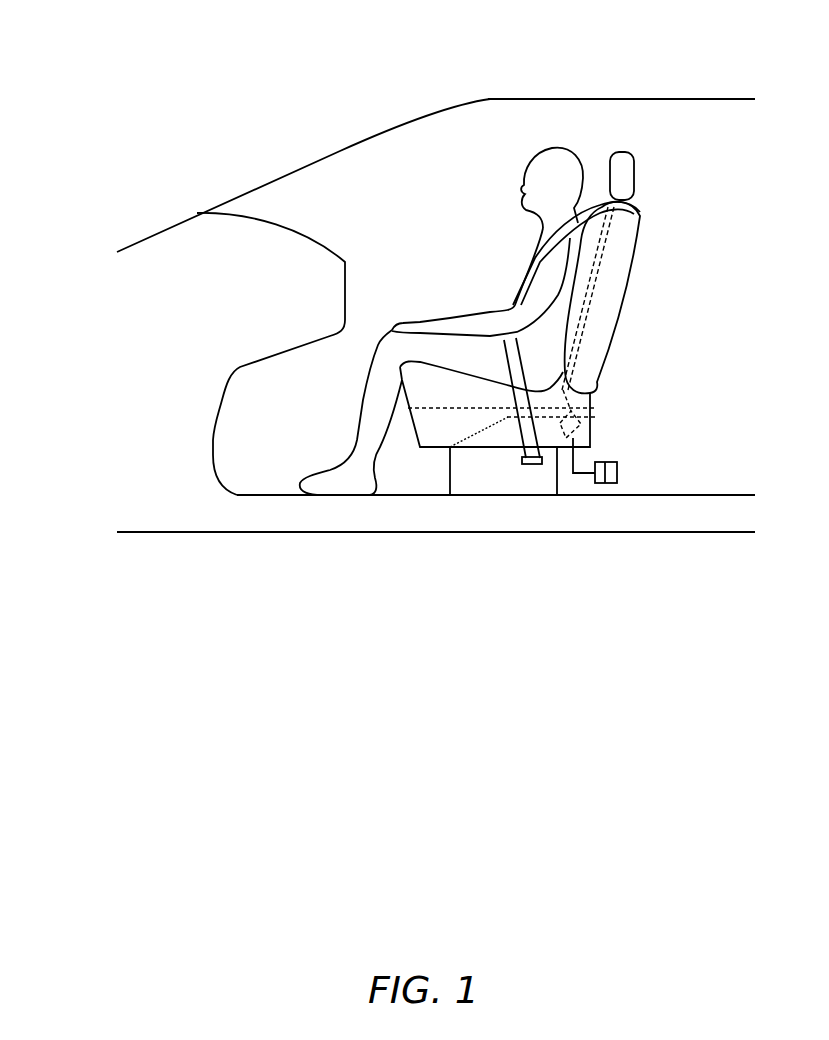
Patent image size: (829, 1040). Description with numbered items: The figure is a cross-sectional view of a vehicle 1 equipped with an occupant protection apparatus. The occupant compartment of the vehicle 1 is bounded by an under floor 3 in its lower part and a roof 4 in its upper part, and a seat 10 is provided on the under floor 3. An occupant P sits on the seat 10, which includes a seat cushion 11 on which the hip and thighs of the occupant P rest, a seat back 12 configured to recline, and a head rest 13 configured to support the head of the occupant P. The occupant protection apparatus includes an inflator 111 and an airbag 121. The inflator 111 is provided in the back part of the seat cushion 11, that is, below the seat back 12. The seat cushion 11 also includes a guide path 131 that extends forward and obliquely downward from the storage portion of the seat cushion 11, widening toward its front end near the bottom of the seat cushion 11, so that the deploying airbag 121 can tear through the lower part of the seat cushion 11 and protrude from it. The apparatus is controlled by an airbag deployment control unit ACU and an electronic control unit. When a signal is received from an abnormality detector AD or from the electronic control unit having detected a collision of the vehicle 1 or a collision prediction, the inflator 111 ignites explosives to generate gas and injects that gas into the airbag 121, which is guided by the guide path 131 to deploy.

The vehicle 1 is at (436, 274).
The under floor 3 is at (693, 495).
The roof 4 is at (632, 99).
The seat 10 is at (558, 340).
The seat cushion 11 is at (483, 438).
The seat back 12 is at (623, 297).
The head rest 13 is at (622, 152).
The inflator 111 is at (582, 424).
The airbag 121 is at (598, 322).
The guide path 131 is at (440, 413).
The occupant P is at (554, 148).
The airbag deployment control unit ACU is at (597, 482).
The abnormality detector AD is at (617, 473).